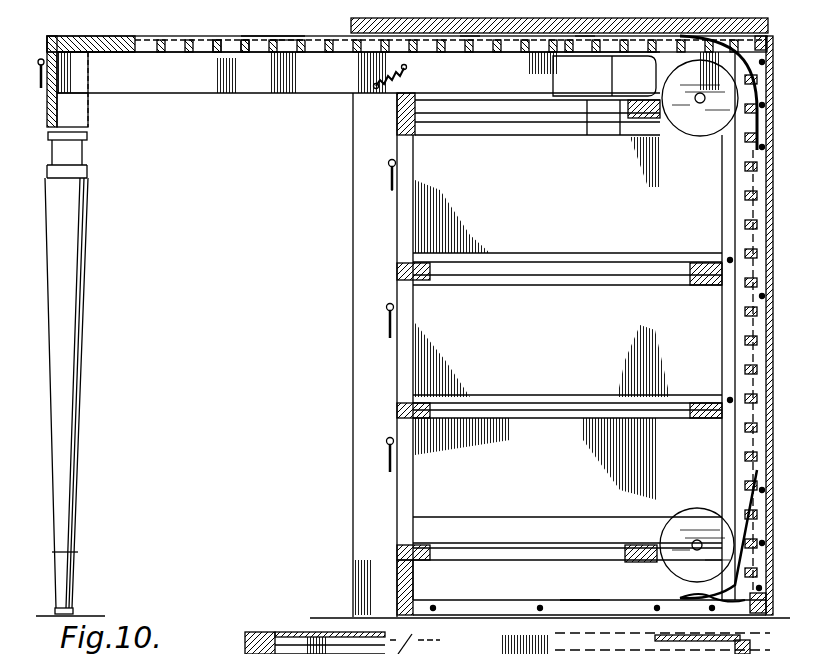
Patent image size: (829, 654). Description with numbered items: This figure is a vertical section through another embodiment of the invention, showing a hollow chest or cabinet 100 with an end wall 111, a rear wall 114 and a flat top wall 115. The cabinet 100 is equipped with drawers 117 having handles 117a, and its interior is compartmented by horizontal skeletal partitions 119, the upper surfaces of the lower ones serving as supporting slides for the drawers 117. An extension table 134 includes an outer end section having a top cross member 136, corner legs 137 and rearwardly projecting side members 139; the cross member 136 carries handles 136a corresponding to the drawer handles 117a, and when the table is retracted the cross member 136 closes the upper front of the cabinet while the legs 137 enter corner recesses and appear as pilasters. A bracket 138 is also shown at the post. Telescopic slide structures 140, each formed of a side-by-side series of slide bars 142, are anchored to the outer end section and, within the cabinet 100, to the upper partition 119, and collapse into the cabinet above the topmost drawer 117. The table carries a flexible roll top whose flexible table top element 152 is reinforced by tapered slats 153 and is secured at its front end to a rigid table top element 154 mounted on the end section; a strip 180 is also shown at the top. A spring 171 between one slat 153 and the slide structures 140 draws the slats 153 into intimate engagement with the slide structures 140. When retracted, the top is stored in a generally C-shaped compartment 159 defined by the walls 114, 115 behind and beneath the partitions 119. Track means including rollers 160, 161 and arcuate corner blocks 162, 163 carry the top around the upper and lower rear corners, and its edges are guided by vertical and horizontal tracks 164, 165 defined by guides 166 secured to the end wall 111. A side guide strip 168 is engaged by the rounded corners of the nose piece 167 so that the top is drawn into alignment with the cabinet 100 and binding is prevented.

The cabinet 100 is at (350, 23).
The end wall 111 is at (353, 153).
The rear wall 114 is at (768, 311).
The top wall 115 is at (470, 34).
The drawer 117 is at (400, 153).
The drawer handle 117a is at (390, 190).
The horizontal skeletal partition 119 is at (465, 112).
The extension table 134 is at (157, 34).
The top cross member 136 is at (47, 103).
The handle 136a is at (46, 55).
The corner leg 137 is at (73, 392).
The post bracket 138 is at (47, 116).
The side member 139 is at (180, 92).
The telescopic slide structure 140 is at (600, 82).
The slide bar 142 is at (620, 96).
The flexible table top element 152 is at (283, 40).
The slat 153 is at (250, 52).
The rigid table top element 154 is at (110, 53).
The C-shaped compartment 159 is at (740, 325).
The upper roller 160 is at (698, 120).
The lower roller 161 is at (683, 520).
The upper arcuate corner block 162 is at (760, 46).
The lower arcuate corner block 163 is at (740, 643).
The vertical track 164 is at (750, 360).
The horizontal track 165 is at (568, 606).
The guide strip 166 is at (750, 390).
The nose piece 167 is at (713, 598).
The side guide strip 168 is at (583, 31).
The spring 171 is at (400, 80).
The strip 180 is at (284, 43).